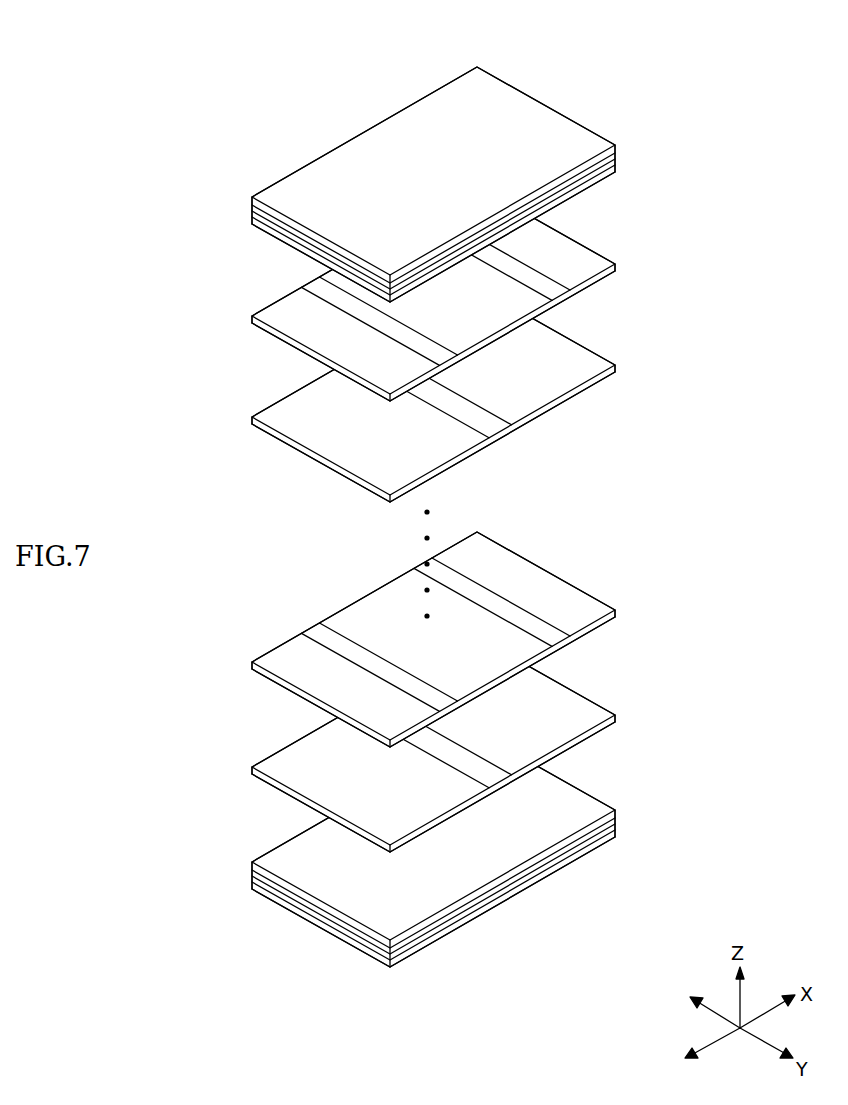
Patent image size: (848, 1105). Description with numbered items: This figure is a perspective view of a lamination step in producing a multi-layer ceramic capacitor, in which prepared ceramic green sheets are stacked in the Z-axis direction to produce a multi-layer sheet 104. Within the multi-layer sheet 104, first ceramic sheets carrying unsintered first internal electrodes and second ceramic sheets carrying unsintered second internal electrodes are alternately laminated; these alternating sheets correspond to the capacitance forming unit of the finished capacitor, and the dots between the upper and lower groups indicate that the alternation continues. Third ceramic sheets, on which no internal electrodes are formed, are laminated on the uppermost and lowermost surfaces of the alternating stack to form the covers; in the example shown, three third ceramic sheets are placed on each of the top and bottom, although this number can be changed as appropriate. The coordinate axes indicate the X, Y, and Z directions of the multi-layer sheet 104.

The multi-layer sheet 104 is at (486, 486).